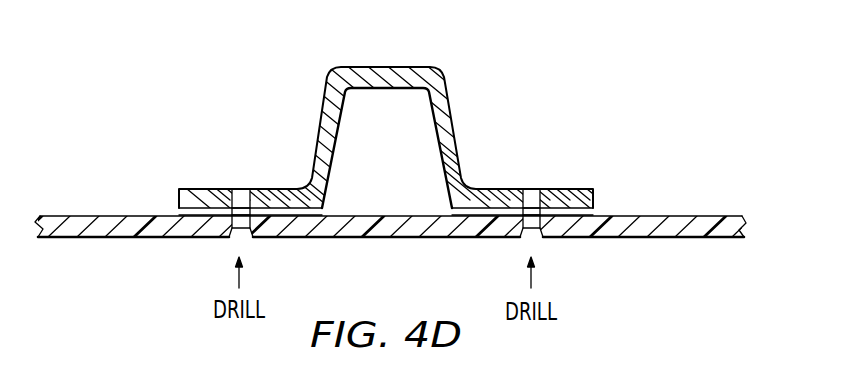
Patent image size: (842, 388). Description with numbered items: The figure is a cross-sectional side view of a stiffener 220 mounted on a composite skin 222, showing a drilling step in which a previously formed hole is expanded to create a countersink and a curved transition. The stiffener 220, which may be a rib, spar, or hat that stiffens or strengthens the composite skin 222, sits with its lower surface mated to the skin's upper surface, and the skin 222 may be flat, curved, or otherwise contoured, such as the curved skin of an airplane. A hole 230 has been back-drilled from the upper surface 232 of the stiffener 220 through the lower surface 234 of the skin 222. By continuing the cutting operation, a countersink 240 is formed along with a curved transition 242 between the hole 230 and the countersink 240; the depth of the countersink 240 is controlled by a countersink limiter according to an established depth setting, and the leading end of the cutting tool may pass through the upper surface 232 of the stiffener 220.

The stiffener 220 is at (400, 72).
The composite skin 222 is at (93, 222).
The hole 230 is at (242, 197).
The upper surface of stiffener 232 is at (570, 190).
The lower surface of skin 234 is at (405, 238).
The countersink 240 is at (248, 233).
The curved transition 242 is at (238, 235).